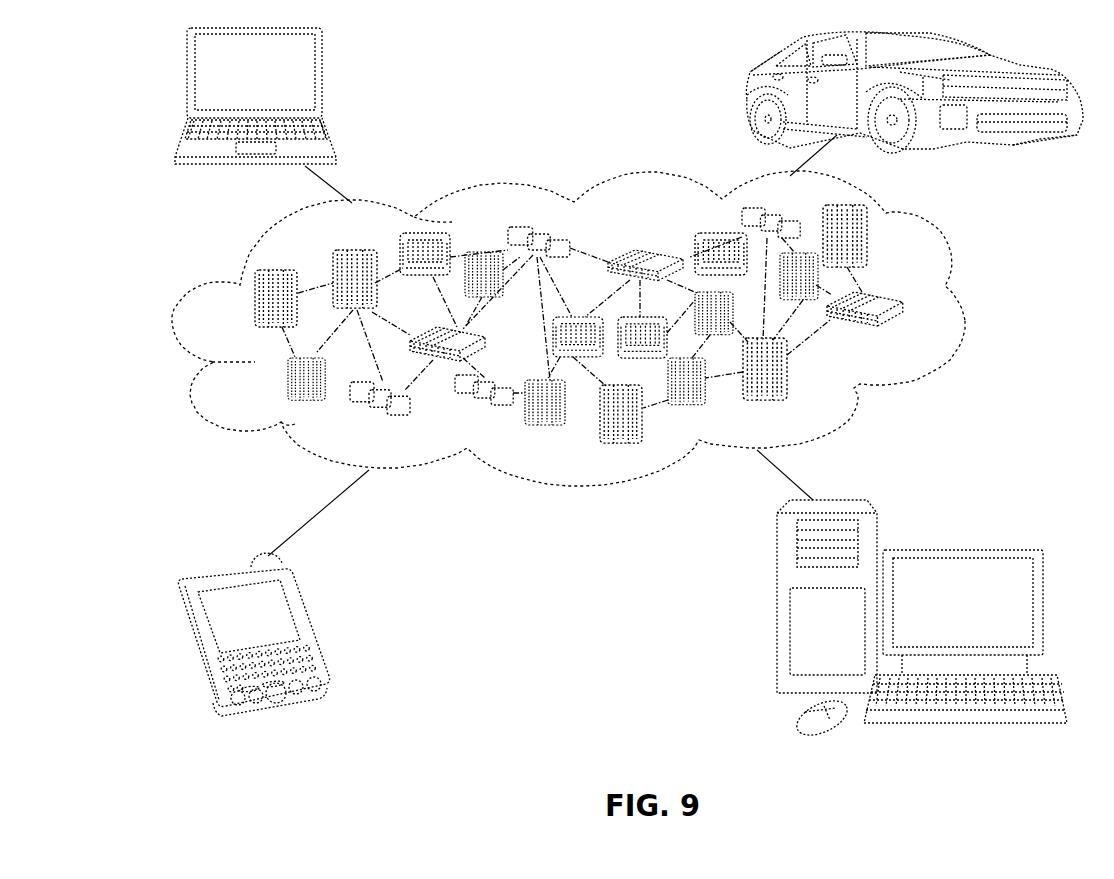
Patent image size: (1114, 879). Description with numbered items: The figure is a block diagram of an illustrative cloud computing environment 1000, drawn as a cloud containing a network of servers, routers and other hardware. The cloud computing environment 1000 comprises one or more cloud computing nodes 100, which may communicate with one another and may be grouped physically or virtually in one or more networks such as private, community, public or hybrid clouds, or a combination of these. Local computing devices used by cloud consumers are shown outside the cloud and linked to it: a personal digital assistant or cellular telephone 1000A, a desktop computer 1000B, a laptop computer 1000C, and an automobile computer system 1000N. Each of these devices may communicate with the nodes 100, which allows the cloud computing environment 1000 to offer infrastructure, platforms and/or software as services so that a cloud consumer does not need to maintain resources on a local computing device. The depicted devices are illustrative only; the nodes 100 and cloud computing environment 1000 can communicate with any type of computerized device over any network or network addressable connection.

The cloud computing environment 1000 is at (597, 328).
The cloud computing nodes 100 is at (912, 334).
The personal digital assistant (PDA) or cellular telephone 1000A is at (312, 627).
The desktop computer 1000B is at (960, 548).
The laptop computer 1000C is at (322, 79).
The automobile computer system 1000N is at (748, 92).